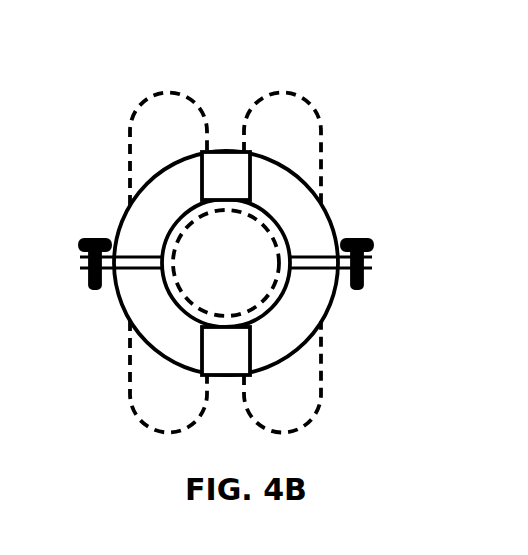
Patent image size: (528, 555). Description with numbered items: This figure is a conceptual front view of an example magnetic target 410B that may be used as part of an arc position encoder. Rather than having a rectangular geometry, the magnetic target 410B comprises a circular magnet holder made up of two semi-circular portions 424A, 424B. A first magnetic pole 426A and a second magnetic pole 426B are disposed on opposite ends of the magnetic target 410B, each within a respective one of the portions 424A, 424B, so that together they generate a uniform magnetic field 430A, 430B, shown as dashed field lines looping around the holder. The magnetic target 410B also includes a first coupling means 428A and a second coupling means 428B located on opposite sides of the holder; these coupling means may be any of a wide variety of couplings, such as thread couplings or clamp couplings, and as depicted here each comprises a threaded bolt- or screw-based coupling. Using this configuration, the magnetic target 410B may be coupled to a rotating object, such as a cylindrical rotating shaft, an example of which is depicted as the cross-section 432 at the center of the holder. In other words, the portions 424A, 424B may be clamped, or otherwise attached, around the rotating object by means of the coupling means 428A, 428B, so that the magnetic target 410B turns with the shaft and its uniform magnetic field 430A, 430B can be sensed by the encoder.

The uniform magnetic field 430A is at (196, 103).
The uniform magnetic field 430B is at (321, 417).
The magnetic target 410B is at (285, 145).
The first magnetic pole 426A is at (258, 178).
The second magnetic pole 426B is at (254, 360).
The cross-section 432 is at (232, 255).
The semi-circular portion 424A is at (309, 246).
The semi-circular portion 424B is at (304, 318).
The first coupling means 428A is at (378, 245).
The second coupling means 428B is at (101, 228).